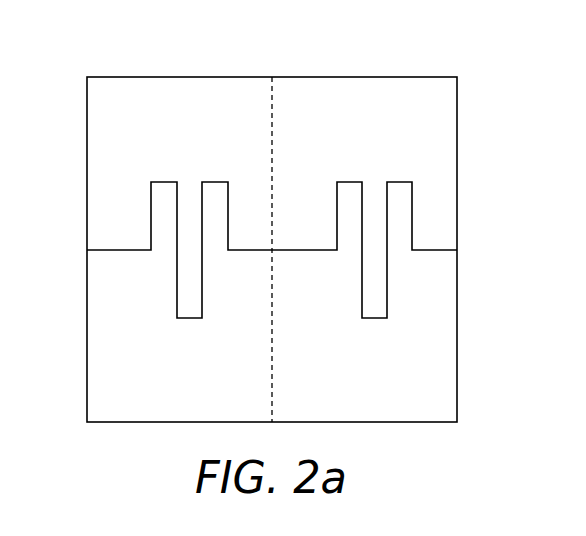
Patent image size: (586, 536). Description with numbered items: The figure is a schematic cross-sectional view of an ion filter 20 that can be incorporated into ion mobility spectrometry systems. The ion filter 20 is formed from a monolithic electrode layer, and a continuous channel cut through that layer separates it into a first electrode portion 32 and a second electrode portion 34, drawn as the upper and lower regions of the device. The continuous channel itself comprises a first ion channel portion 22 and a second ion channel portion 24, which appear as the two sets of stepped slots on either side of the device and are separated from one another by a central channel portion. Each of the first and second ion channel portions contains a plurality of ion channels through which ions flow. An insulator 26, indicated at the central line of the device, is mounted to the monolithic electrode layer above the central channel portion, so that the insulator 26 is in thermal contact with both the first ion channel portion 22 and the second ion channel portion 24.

The ion filter 20 is at (438, 63).
The first ion channel portion 22 is at (387, 305).
The second ion channel portion 24 is at (151, 198).
The insulator 26 is at (272, 110).
The first electrode portion 32 is at (147, 92).
The second electrode portion 34 is at (110, 393).